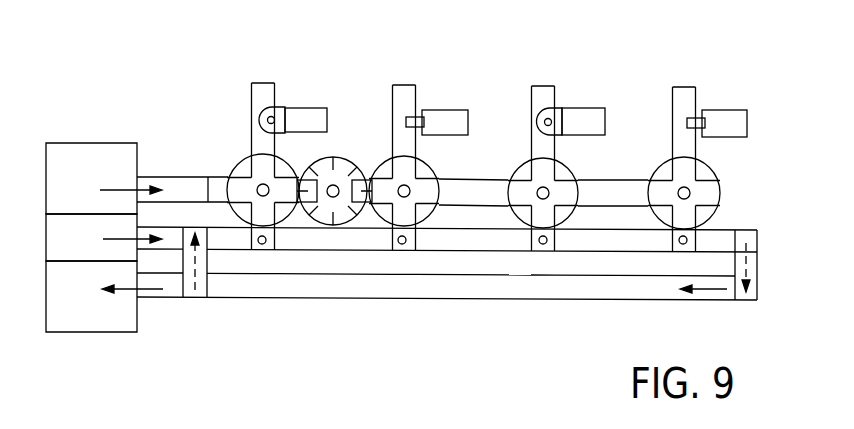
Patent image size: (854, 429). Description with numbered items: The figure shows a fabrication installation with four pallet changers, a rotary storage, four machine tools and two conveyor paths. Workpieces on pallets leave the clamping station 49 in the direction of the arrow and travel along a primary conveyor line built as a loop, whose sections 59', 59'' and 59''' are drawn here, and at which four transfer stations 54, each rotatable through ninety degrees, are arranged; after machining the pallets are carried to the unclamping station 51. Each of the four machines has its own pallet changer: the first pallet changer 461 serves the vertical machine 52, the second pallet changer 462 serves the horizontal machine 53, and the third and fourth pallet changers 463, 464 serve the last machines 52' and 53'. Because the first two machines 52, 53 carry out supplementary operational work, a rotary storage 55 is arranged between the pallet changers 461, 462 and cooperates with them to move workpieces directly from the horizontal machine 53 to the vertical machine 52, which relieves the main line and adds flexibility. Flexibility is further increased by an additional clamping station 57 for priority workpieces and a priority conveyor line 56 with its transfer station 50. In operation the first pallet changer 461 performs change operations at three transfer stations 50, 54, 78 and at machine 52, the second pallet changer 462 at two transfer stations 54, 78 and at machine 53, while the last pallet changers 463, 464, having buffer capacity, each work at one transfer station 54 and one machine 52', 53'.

The clamping station 49 is at (85, 252).
The transfer station 50 is at (218, 188).
The unclamping station 51 is at (73, 323).
The vertical machine 52 is at (293, 95).
The vertical machine 52' is at (571, 95).
The horizontal machine 53 is at (437, 97).
The horizontal machine 53' is at (717, 96).
The transfer station 54 is at (268, 247).
The rotary storage 55 is at (340, 218).
The priority conveyor line 56 is at (170, 192).
The clamping station for priority workpieces 57 is at (72, 156).
The primary conveyor line section 59' is at (334, 292).
The primary conveyor line section 59'' is at (473, 293).
The primary conveyor line section 59''' is at (613, 293).
The transfer station 78 is at (303, 165).
The first pallet changer 461 is at (245, 167).
The second pallet changer 462 is at (423, 175).
The third pallet changer 463 is at (570, 195).
The fourth pallet changer 464 is at (662, 177).